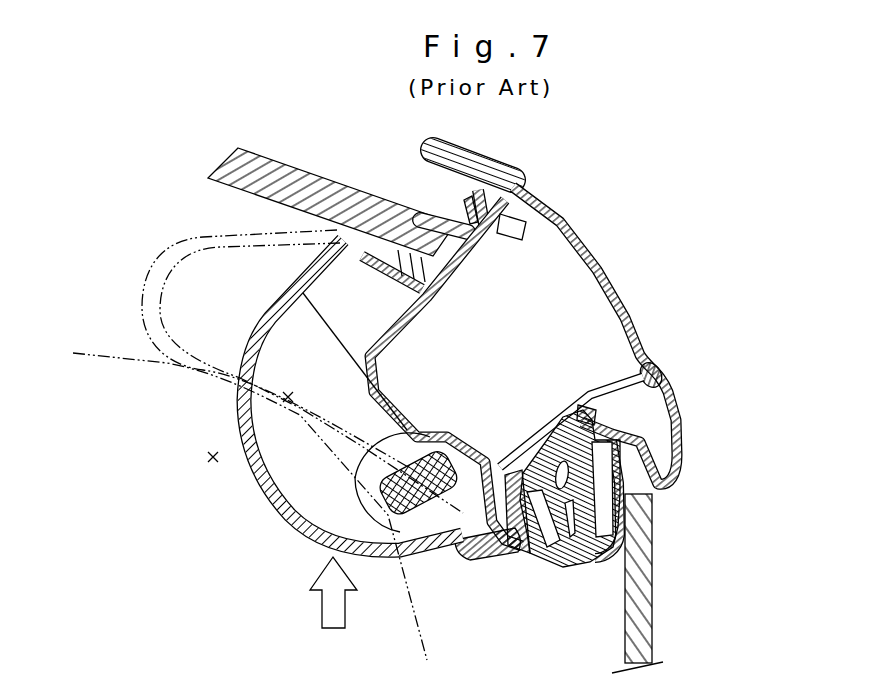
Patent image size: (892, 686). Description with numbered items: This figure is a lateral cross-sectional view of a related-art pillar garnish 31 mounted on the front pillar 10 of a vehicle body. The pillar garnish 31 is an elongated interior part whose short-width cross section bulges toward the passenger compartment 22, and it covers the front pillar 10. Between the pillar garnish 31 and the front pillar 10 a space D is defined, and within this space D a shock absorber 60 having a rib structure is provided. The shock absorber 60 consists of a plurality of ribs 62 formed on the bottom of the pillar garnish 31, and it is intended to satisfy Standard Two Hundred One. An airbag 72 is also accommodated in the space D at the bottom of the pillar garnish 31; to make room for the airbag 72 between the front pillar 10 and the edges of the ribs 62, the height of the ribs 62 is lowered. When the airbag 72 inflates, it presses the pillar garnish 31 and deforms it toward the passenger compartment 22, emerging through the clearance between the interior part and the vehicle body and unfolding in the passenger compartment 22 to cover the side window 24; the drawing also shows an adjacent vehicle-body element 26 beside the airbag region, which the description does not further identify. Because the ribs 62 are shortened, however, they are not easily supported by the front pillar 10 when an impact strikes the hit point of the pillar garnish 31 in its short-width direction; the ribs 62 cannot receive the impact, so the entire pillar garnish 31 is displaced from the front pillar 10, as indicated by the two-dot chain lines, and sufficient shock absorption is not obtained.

The front pillar 10 is at (619, 280).
The side window 24 is at (330, 172).
The window glass 26 is at (647, 583).
The pillar garnish 31 is at (168, 241).
The shock absorber 60 is at (292, 466).
The ribs 62 is at (290, 352).
The airbag 72 is at (420, 535).
The passenger compartment 22 is at (208, 457).
The space D is at (275, 396).